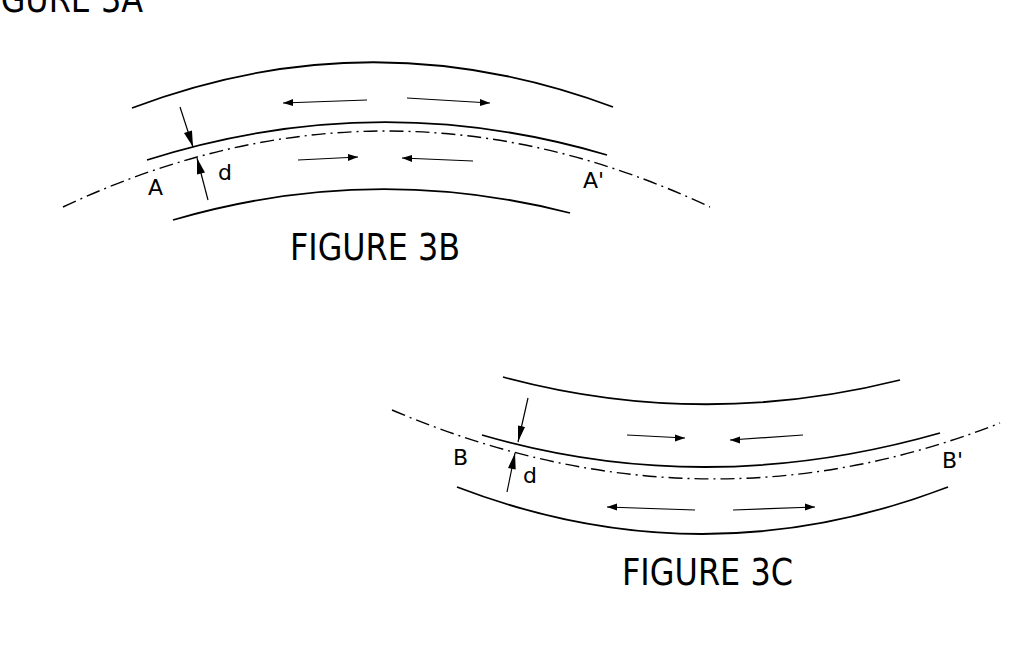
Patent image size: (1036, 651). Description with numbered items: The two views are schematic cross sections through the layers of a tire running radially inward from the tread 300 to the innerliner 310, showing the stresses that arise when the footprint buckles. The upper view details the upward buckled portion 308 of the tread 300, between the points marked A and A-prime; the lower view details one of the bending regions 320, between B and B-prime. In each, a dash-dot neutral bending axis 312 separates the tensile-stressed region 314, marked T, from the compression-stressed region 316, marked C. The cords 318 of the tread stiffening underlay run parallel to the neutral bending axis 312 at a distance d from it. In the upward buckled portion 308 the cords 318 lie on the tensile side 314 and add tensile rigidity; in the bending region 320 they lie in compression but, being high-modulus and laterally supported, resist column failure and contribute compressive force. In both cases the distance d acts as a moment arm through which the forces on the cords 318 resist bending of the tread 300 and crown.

In FIG. 3B, the tread 300 is at (270, 200).
In FIG. 3C, the tread 300 is at (890, 507).
In FIG. 3B, the upward buckled portion 308 is at (407, 42).
In FIG. 3B, the innerliner 310 is at (568, 90).
In FIG. 3C, the innerliner 310 is at (813, 397).
In FIG. 3B, the neutral bending axis 312 is at (135, 175).
In FIG. 3C, the neutral bending axis 312 is at (967, 435).
In FIG. 3B, the tensile-stressed region 314 is at (215, 105).
In FIG. 3C, the tensile-stressed region 314 is at (570, 408).
In FIG. 3B, the compression-stressed region 316 is at (522, 185).
In FIG. 3C, the compression-stressed region 316 is at (573, 505).
In FIG. 3B, the cords 318 is at (585, 152).
In FIG. 3C, the cords 318 is at (502, 440).
In FIG. 3C, the upward bending regions 320 is at (707, 372).